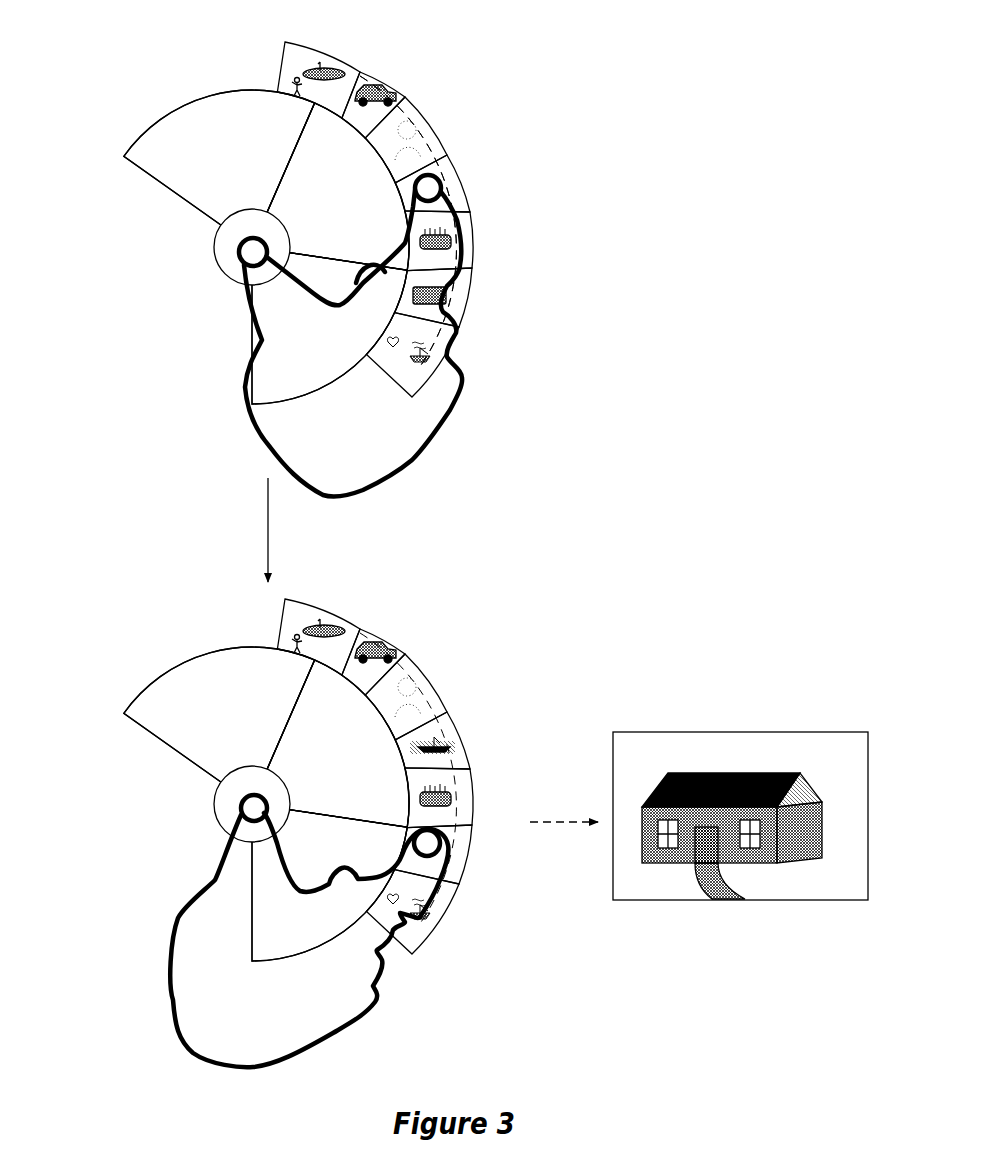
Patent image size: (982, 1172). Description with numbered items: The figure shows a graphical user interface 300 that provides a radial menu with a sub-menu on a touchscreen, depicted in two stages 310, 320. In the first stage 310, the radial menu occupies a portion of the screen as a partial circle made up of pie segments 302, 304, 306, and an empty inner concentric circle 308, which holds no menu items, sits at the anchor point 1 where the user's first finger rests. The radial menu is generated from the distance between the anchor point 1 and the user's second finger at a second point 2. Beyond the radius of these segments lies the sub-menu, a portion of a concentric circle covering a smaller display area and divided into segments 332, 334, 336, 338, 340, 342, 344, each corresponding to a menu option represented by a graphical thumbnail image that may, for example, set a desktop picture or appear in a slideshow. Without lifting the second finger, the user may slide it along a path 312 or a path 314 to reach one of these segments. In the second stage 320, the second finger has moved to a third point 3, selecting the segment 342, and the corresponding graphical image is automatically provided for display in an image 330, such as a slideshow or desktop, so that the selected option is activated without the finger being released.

The anchor point 1 is at (216, 236).
The second point 2 is at (441, 185).
The third point 3 is at (438, 848).
The graphical user interface 300 is at (166, 454).
The pie segment 302 is at (159, 164).
The pie segment 304 is at (337, 146).
The pie segment 306 is at (392, 308).
The empty inner concentric circle 308 is at (264, 232).
The stage 310 is at (128, 80).
The path 312 is at (367, 85).
The path 314 is at (453, 288).
The stage 320 is at (128, 637).
The image 330 is at (771, 732).
The sub-menu segment 332 is at (334, 55).
The sub-menu segment 334 is at (395, 90).
The sub-menu segment 336 is at (425, 120).
The sub-menu segment 338 is at (455, 170).
The sub-menu segment 340 is at (472, 242).
The sub-menu segment 342 is at (461, 317).
The sub-menu segment 344 is at (462, 372).